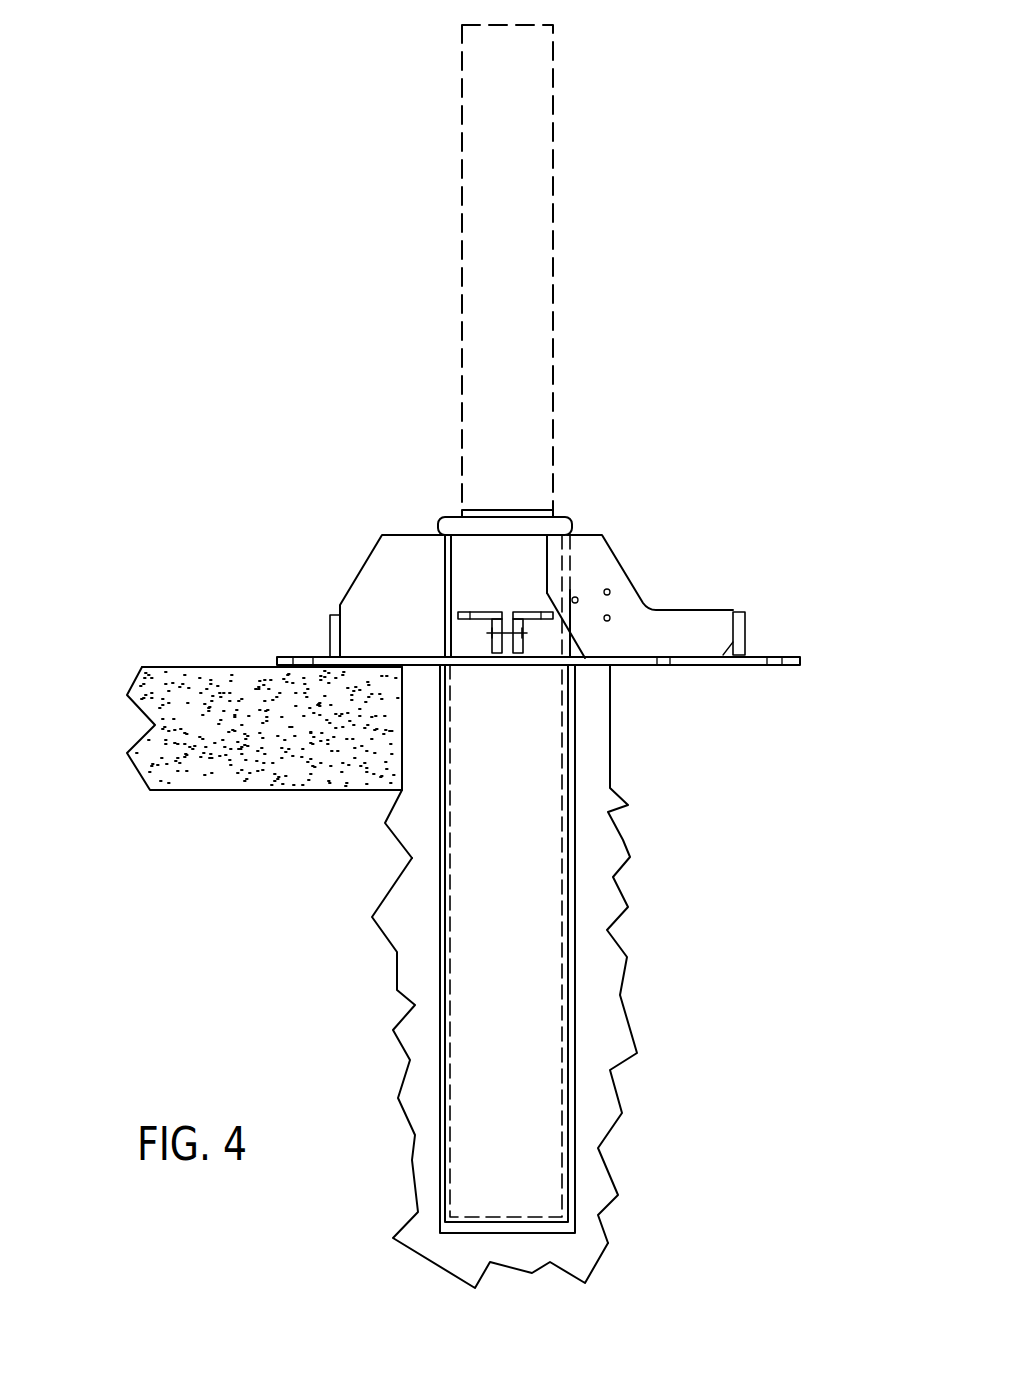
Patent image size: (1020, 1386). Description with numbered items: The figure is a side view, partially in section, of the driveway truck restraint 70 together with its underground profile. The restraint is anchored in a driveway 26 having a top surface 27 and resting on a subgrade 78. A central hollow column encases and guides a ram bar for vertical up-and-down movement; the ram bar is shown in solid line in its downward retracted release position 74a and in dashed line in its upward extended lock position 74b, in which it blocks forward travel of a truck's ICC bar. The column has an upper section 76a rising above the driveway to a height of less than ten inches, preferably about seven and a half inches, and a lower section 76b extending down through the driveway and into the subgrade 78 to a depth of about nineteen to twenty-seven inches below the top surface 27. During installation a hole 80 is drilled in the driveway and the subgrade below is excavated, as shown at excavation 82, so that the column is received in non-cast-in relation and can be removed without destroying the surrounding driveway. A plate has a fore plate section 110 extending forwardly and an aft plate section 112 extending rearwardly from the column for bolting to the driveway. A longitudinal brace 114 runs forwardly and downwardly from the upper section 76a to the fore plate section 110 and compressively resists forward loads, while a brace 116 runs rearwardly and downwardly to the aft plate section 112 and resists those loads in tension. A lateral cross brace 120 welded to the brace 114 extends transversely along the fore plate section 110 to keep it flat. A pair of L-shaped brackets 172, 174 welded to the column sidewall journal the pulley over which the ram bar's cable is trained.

The ram bar upward extended lock position 74b is at (482, 27).
The ram bar downward retracted release position 74a is at (498, 510).
The driveway truck restraint 70 is at (355, 537).
The upper section of central hollow column 76a is at (465, 555).
The brace 114 is at (368, 583).
The brace 116 is at (627, 578).
The lateral cross brace 120 is at (330, 638).
The aft plate section 112 is at (790, 655).
The fore plate section 110 is at (277, 657).
The L-shaped bracket 172 is at (487, 612).
The L-shaped bracket 174 is at (543, 622).
The top surface of the driveway 27 is at (155, 667).
The driveway 26 is at (163, 708).
The lower section of central hollow column 76b is at (437, 990).
The hole 80 is at (405, 745).
The excavation 82 is at (390, 895).
The subgrade 78 is at (167, 897).